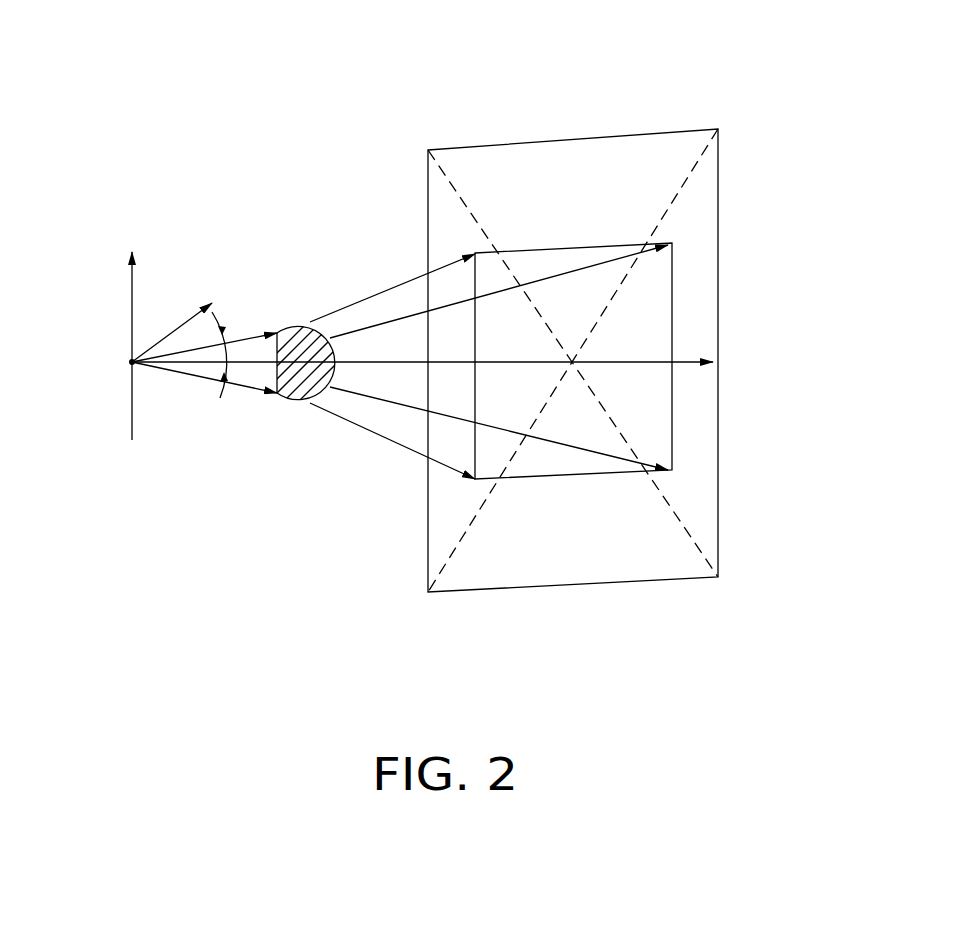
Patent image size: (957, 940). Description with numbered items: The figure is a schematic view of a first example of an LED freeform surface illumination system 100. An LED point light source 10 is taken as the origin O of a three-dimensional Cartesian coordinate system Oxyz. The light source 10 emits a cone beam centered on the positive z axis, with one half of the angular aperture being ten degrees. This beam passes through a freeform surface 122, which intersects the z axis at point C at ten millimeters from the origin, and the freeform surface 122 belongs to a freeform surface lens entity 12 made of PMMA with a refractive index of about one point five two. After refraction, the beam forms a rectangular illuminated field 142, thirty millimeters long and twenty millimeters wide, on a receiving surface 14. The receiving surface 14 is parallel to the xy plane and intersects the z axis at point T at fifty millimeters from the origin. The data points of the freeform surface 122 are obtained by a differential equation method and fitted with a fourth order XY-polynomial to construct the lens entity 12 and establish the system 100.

The LED freeform surface illumination system 100 is at (385, 78).
The LED point light source 10 is at (130, 362).
The freeform surface lens entity 12 is at (302, 401).
The freeform surface 122 is at (322, 318).
The receiving surface 14 is at (443, 506).
The rectangular illuminated field 142 is at (607, 243).